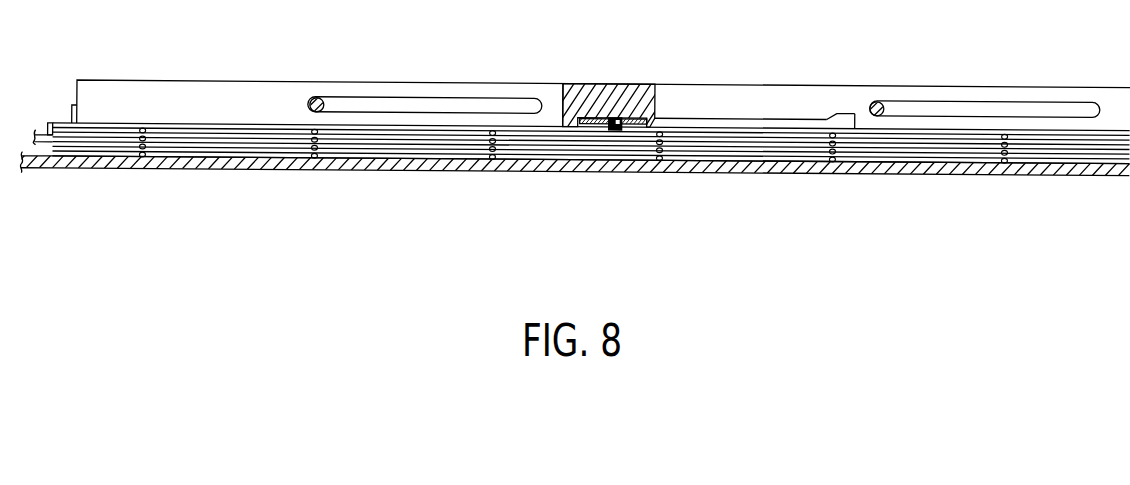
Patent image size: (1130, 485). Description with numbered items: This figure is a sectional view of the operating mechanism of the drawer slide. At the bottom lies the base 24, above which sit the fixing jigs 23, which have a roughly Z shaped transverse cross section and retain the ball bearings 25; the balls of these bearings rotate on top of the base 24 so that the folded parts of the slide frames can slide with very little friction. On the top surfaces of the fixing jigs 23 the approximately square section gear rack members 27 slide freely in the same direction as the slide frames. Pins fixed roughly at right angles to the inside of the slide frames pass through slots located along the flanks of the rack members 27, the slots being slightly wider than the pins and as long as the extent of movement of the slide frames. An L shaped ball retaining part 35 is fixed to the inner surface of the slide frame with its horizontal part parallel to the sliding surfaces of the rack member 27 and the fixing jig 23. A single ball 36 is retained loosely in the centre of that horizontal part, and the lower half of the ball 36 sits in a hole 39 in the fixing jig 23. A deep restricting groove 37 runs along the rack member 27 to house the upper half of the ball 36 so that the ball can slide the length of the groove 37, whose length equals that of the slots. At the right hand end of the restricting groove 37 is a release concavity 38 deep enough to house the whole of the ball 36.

The fixing jig 23 is at (218, 123).
The base 24 is at (247, 168).
The ball bearing 25 is at (730, 128).
The gear rack member 27 is at (755, 102).
The ball retaining part 35 is at (593, 112).
The ball 36 is at (622, 114).
The restricting groove 37 is at (793, 124).
The release concavity 38 is at (842, 108).
The hole 39 is at (612, 127).